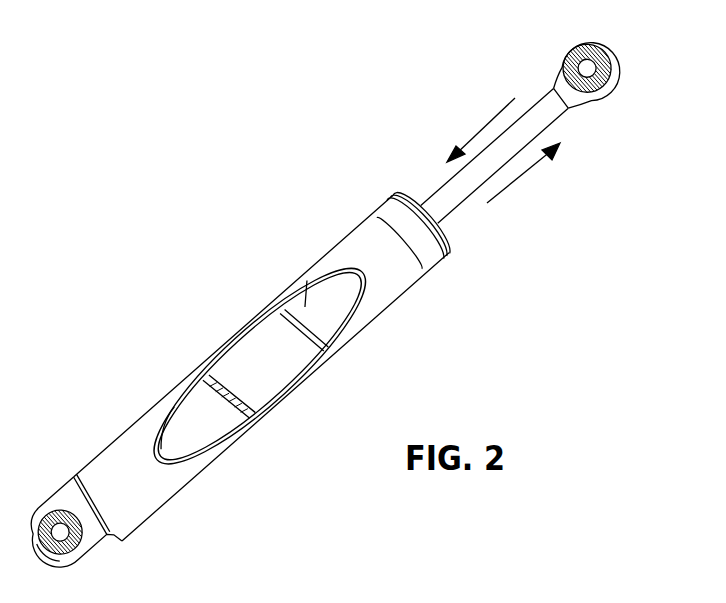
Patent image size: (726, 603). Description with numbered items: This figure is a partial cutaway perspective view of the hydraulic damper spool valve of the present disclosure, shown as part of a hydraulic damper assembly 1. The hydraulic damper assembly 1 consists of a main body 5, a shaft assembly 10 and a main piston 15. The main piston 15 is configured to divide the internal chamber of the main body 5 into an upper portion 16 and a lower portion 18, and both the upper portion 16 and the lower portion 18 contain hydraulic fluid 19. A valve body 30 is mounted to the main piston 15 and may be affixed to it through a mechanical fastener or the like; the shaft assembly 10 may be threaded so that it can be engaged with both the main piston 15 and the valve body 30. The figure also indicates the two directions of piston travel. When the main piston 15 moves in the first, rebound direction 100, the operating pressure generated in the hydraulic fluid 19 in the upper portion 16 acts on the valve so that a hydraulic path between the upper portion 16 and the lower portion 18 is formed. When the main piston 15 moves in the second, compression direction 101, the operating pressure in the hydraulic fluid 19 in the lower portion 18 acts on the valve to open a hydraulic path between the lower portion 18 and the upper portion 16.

The hydraulic damper assembly 1 is at (214, 242).
The main body 5 is at (157, 513).
The shaft assembly 10 is at (537, 103).
The main piston 15 is at (280, 337).
The upper portion 16 is at (307, 280).
The lower portion 18 is at (183, 435).
The hydraulic fluid 19 is at (330, 333).
The valve body 30 is at (260, 391).
The rebound direction 100 is at (520, 183).
The compression direction 101 is at (483, 127).